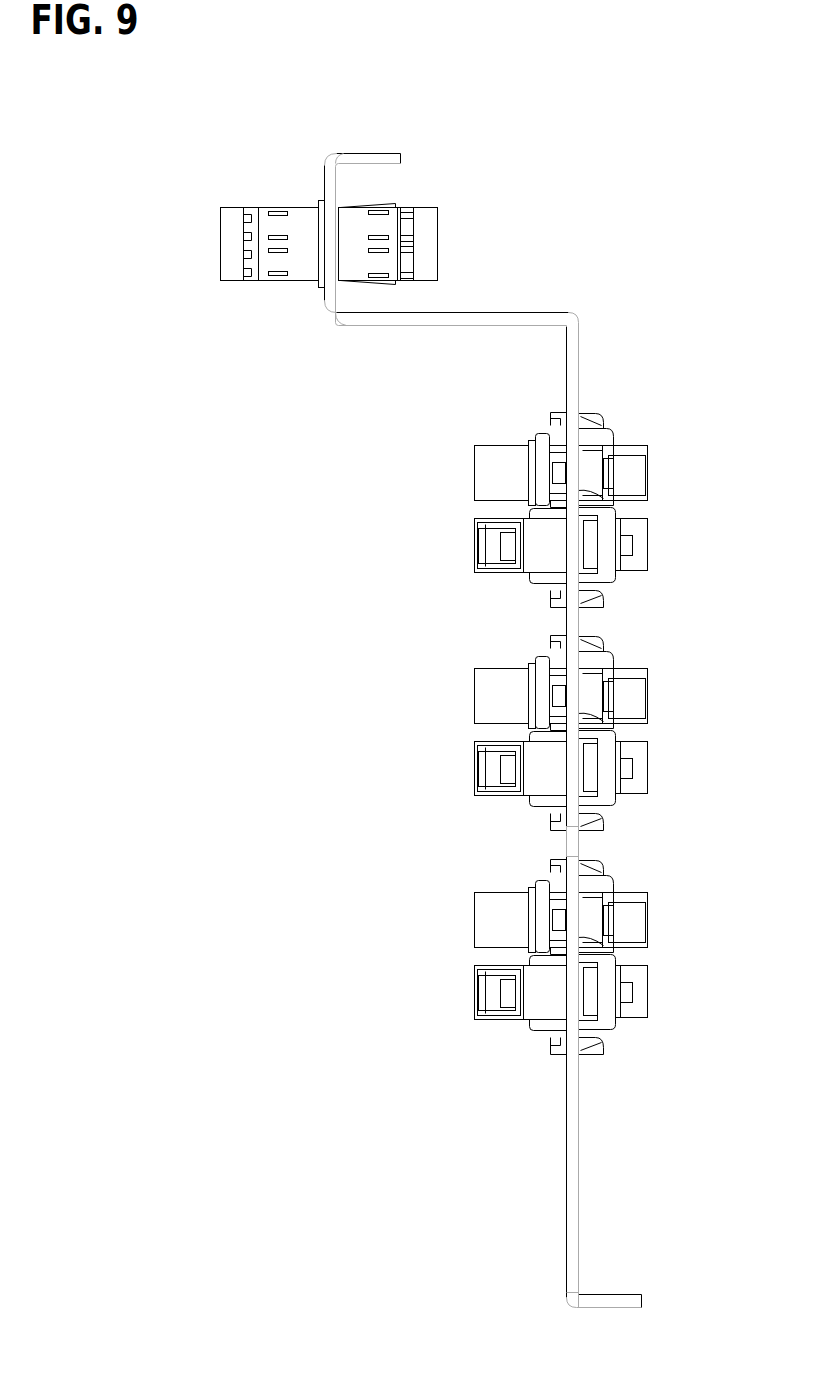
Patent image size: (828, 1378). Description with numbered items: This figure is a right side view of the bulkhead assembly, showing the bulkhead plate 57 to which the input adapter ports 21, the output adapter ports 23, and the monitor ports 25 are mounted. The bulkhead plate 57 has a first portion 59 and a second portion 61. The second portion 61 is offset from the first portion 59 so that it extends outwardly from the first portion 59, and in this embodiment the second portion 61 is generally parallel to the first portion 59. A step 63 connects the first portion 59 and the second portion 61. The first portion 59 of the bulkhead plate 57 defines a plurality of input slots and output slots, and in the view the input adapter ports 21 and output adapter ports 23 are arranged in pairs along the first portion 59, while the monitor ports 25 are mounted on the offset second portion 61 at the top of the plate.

The connector 21 is at (478, 692).
The adapter 23 is at (477, 777).
The coupler 25 is at (277, 282).
The bracket leg 57 is at (557, 1185).
The mounting plate 59 is at (555, 842).
The bracket 61 is at (324, 187).
The bracket arm 63 is at (448, 325).